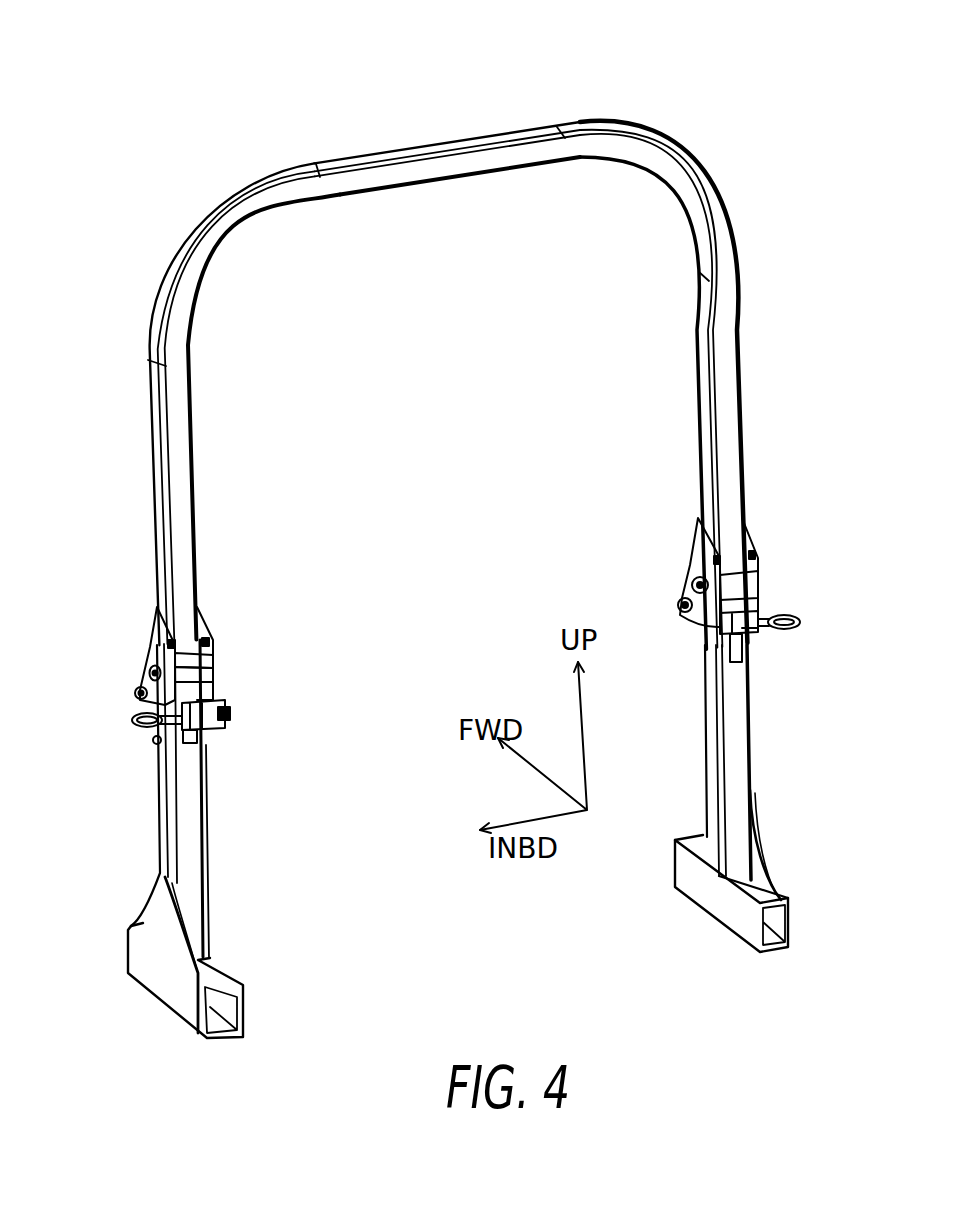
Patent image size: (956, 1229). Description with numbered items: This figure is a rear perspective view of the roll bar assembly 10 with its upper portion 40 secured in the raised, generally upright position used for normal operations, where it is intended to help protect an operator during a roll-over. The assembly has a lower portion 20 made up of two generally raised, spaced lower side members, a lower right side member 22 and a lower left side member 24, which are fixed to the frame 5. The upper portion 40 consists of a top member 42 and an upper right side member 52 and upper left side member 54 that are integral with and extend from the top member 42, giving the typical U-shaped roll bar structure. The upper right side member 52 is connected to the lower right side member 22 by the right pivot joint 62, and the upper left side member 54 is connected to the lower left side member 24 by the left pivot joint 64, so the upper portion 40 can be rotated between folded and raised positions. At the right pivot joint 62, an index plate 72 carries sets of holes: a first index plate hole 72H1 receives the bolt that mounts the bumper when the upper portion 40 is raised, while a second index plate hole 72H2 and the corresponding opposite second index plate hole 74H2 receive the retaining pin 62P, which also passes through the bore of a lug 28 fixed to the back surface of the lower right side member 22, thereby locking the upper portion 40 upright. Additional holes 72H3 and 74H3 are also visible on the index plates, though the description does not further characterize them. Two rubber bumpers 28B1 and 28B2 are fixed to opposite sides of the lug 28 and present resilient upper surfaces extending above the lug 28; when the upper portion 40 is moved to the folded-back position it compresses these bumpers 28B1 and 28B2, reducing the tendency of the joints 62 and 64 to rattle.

The roll bar assembly 10 is at (505, 57).
The upper portion 40 is at (658, 297).
The top member 42 is at (427, 178).
The upper right side member 52 is at (183, 487).
The upper left side member 54 is at (703, 405).
The lower portion 20 is at (245, 895).
The lower right side member 22 is at (203, 825).
The lower left side member 24 is at (710, 738).
The frame 5 is at (245, 1000).
The right pivot joint 62 is at (242, 607).
The left pivot joint 64 is at (670, 572).
The index plate 72 is at (152, 632).
The first index plate hole 72H1 is at (138, 690).
The second index plate hole 72H2 is at (156, 747).
The plate hole 72H3 is at (152, 630).
The second index plate hole 74H2 is at (225, 728).
The plate hole with pin 74H3 is at (209, 640).
The lug 28 is at (190, 740).
The rubber bumper 28B1 is at (213, 672).
The rubber bumper 28B2 is at (213, 693).
The retaining pin 62P is at (143, 733).